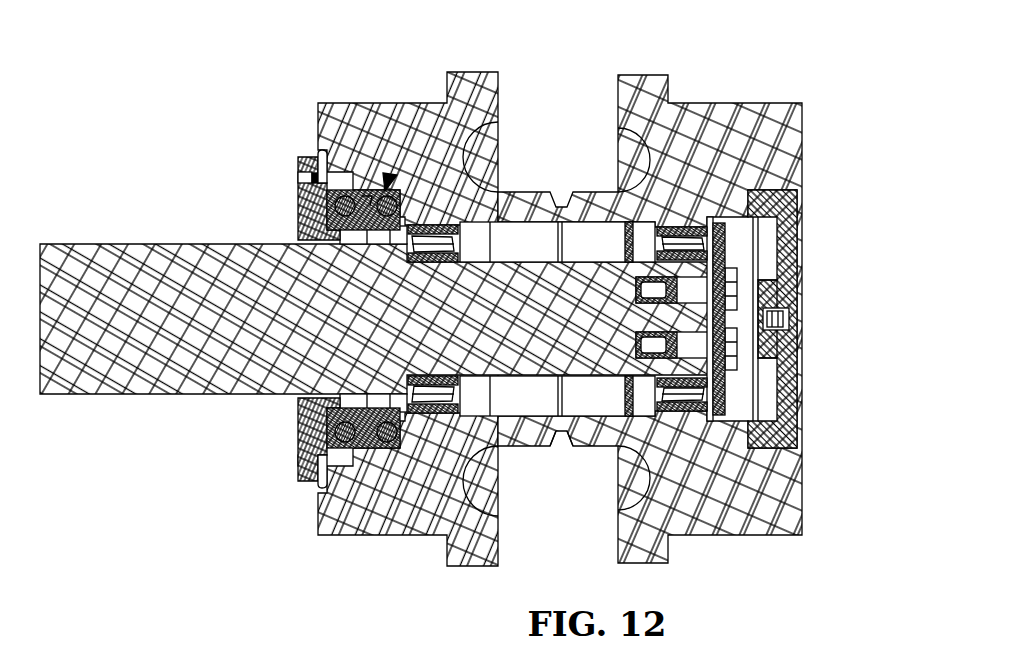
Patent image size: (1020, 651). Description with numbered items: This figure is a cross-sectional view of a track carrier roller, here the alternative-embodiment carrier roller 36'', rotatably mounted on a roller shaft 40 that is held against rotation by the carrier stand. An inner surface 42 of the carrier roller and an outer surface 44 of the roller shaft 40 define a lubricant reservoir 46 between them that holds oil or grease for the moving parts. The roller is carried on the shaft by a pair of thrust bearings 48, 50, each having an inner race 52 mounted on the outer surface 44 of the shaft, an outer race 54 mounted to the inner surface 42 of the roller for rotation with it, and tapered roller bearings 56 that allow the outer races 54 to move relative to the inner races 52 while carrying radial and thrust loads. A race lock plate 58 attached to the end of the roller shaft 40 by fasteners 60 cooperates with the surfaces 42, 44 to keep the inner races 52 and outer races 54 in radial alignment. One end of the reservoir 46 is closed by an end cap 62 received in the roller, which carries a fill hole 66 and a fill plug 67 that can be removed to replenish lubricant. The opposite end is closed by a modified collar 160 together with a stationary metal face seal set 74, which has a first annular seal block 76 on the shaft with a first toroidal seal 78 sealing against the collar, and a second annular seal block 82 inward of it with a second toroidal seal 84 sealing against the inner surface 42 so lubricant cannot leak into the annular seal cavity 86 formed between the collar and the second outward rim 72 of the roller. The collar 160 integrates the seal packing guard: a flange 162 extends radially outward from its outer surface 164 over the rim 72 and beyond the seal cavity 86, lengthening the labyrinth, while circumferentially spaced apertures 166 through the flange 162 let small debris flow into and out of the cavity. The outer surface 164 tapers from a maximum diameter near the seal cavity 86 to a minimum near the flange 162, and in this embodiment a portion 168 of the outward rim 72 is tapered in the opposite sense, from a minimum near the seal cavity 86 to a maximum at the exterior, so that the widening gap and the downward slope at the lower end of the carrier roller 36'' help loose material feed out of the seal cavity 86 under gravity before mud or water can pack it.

The carrier roller 36'' is at (596, 319).
The roller shaft 40 is at (147, 358).
The inner surface 42 is at (520, 420).
The outer surface 44 is at (590, 400).
The lubricant reservoir 46 is at (590, 245).
The thrust bearing 48 is at (430, 414).
The thrust bearing 50 is at (688, 238).
The inner race 52 is at (705, 252).
The outer race 54 is at (440, 226).
The tapered roller bearings 56 is at (458, 226).
The race lock plate 58 is at (727, 372).
The fasteners 60 is at (732, 286).
The end cap 62 is at (801, 175).
The fill hole 66 is at (790, 318).
The fill plug 67 is at (787, 320).
The second outward rim 72 is at (303, 162).
The metal face seal set 74 is at (390, 176).
The first annular seal block 76 is at (330, 413).
The first toroidal seal 78 is at (330, 432).
The second annular seal block 82 is at (388, 442).
The second toroidal seal 84 is at (392, 442).
The seal cavity 86 is at (370, 193).
The collar 160 is at (330, 203).
The flange 162 is at (320, 156).
The outer surface 164 is at (345, 196).
The apertures 166 is at (298, 178).
The portion 168 is at (383, 196).